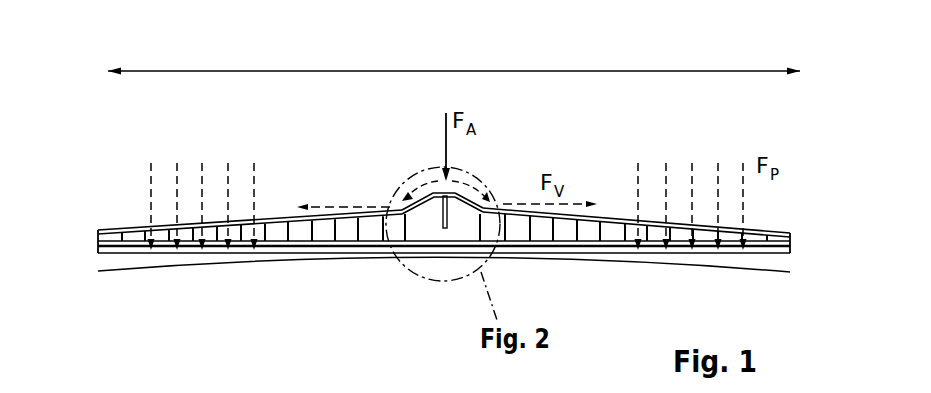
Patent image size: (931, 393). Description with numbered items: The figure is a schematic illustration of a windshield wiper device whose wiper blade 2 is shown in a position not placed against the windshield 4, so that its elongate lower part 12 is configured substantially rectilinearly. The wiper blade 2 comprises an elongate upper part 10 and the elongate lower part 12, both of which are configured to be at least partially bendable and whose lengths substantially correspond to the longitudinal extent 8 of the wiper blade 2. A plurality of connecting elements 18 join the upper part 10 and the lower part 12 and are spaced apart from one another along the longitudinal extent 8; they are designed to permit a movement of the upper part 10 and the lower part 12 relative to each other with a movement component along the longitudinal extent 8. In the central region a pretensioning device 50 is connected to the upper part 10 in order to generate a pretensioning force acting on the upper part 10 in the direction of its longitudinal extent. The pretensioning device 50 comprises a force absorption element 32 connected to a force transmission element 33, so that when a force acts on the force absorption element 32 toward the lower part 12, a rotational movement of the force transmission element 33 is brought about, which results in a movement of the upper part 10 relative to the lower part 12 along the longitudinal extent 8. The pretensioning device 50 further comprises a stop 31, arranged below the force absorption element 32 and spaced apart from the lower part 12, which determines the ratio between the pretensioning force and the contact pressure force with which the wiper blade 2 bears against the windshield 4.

The wiper blade 2 is at (619, 203).
The windshield 4 is at (720, 269).
The longitudinal extent 8 is at (465, 70).
The elongate upper part 10 is at (280, 217).
The elongate lower part 12 is at (283, 243).
The connecting elements 18 is at (357, 226).
The stop 31 is at (441, 229).
The force absorption element 32 is at (448, 192).
The force transmission element 33 is at (471, 203).
The pretensioning device 50 is at (401, 155).